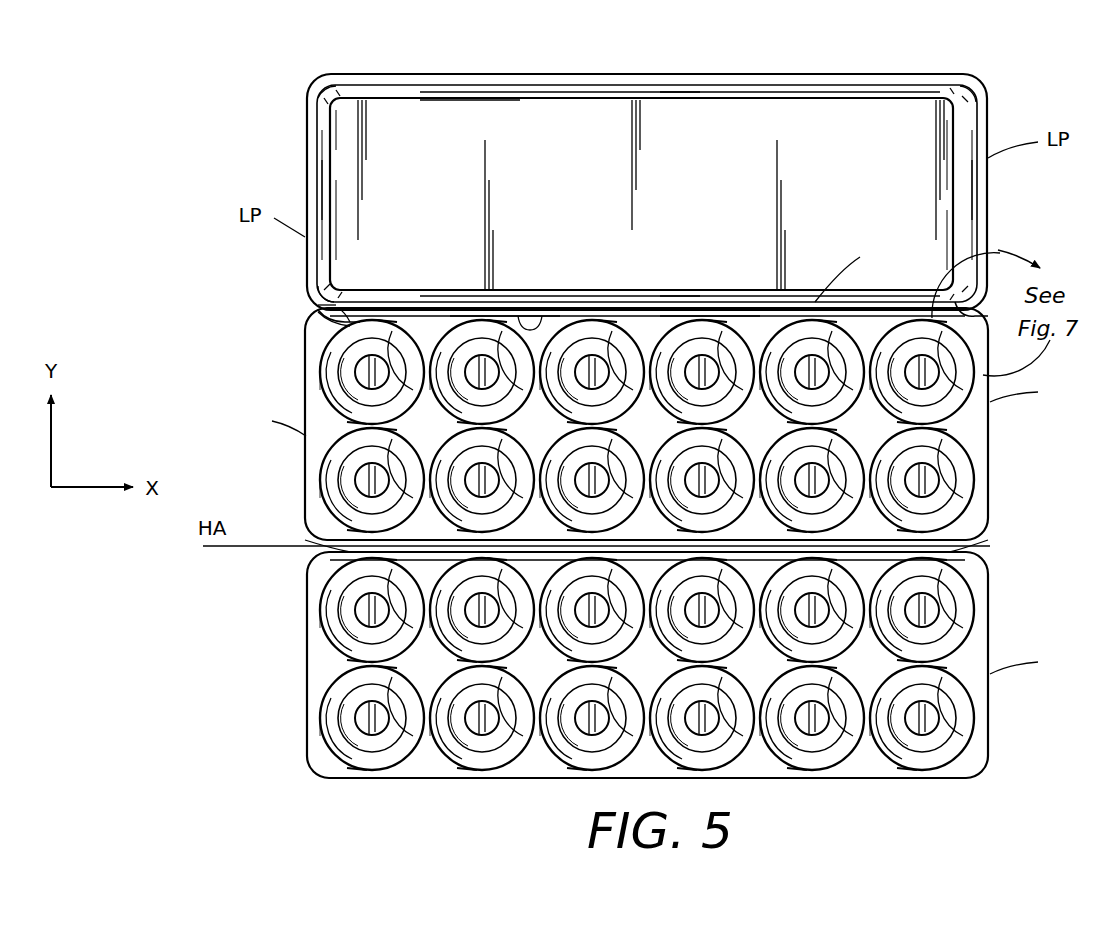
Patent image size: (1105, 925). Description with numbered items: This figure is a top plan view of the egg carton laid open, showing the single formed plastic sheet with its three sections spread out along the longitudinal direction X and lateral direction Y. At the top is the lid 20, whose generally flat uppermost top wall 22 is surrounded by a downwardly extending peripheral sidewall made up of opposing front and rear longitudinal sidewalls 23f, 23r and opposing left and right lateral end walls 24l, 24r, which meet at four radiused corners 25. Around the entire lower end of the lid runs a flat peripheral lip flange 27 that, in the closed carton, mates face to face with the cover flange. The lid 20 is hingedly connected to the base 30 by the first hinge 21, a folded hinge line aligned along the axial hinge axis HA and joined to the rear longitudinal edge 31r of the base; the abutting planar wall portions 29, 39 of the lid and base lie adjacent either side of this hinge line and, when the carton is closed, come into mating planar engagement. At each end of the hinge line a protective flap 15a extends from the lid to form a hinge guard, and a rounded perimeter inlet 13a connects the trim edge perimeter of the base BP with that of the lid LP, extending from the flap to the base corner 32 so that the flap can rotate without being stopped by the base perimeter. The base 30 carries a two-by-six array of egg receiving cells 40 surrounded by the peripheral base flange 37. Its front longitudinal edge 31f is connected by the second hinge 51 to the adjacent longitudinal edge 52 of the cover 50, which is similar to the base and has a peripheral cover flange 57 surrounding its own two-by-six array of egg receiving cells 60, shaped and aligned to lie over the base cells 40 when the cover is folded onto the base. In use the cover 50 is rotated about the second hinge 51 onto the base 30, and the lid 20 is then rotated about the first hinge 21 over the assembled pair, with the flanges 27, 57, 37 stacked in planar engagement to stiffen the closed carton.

The lid 20 is at (992, 233).
The first hinge 21 is at (498, 304).
The top wall 22 is at (426, 108).
The front sidewall 23f is at (660, 100).
The rear sidewall 23r is at (635, 302).
The left lateral end wall 24l is at (323, 198).
The right lateral end wall 24r is at (968, 203).
The corner 25 is at (320, 92).
The peripheral flange 27 is at (302, 142).
The planar wall portion 29 is at (366, 304).
The base 30 is at (653, 386).
The front longitudinal edge 31f is at (330, 535).
The rear longitudinal edge 31r is at (698, 303).
The base corner 32 is at (315, 350).
The base flange 37 is at (303, 462).
The planar wall portion 39 is at (542, 310).
The egg receiving cells 40 is at (962, 412).
The cover 50 is at (656, 665).
The second hinge 51 is at (990, 546).
The longitudinal edge 52 is at (330, 560).
The cover flange 57 is at (305, 662).
The egg receiving cells 60 is at (972, 606).
The rounded perimeter inlet 13a is at (330, 330).
The protective flap 15a is at (316, 304).